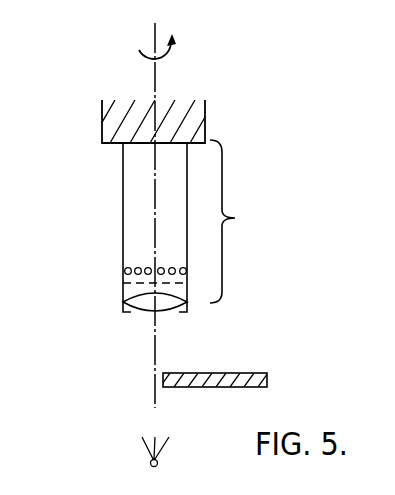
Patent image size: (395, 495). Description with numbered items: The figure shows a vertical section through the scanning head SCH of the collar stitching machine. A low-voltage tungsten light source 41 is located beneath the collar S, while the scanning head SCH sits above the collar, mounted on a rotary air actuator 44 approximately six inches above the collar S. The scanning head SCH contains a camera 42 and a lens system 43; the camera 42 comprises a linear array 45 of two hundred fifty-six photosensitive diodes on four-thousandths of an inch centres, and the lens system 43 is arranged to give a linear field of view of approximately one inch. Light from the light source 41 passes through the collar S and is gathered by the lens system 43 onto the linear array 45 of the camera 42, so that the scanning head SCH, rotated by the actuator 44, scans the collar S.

The low-voltage tungsten light source 41 is at (158, 461).
The camera 42 is at (122, 198).
The lens system 43 is at (123, 307).
The rotary air actuator 44 is at (198, 128).
The linear array 45 is at (149, 268).
The collar S is at (235, 373).
The scanning head SCH is at (255, 221).